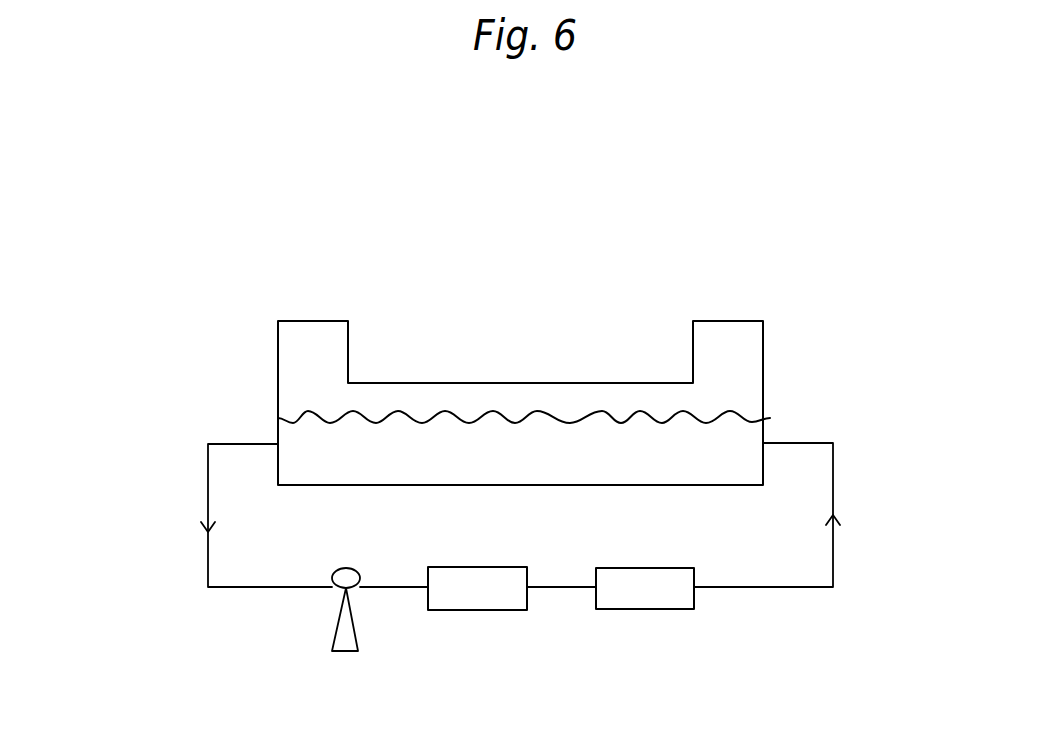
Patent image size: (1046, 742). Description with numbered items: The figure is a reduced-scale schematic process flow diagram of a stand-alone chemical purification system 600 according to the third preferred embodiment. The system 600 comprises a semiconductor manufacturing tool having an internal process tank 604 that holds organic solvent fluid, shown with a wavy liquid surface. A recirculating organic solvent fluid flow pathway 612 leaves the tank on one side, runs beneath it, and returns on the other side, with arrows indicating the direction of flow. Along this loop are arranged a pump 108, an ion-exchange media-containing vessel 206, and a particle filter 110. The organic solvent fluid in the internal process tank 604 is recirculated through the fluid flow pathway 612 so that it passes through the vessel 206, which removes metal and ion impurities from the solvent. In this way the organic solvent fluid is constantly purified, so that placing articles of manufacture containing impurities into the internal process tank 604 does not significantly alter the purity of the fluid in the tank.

The stand-alone chemical purification system 600 is at (858, 284).
The internal process tank 604 is at (553, 383).
The recirculating organic solvent fluid flow pathway 612 is at (208, 478).
The pump 108 is at (338, 615).
The ion-exchange media-containing vessel 206 is at (498, 610).
The particle filter 110 is at (647, 609).